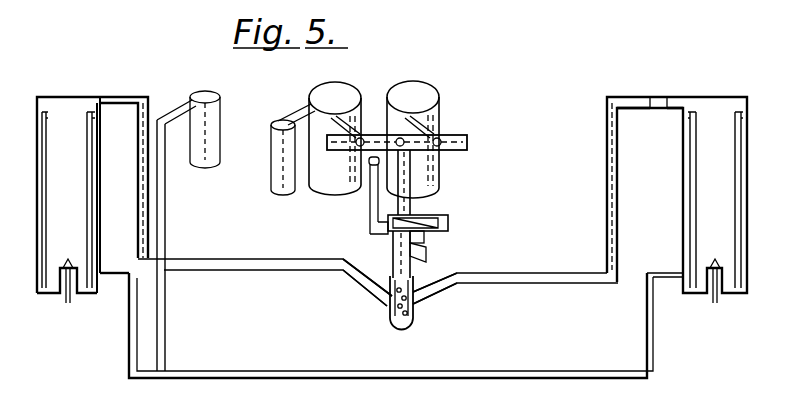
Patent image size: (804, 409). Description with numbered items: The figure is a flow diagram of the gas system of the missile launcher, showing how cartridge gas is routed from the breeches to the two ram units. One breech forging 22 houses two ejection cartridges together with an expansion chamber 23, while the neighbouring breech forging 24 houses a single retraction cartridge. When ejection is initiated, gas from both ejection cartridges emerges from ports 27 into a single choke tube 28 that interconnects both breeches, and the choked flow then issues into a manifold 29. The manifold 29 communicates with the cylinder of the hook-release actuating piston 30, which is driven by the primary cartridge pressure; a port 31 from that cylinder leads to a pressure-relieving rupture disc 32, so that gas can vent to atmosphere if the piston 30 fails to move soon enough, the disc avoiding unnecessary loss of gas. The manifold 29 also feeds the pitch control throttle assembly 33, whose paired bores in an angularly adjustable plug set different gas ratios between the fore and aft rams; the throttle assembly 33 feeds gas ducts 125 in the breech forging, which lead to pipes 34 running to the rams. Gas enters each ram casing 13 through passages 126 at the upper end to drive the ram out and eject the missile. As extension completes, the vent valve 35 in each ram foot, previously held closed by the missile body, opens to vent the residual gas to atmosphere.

The ram casing 13 is at (100, 202).
The breech forging 22 is at (342, 94).
The expansion chamber 23 is at (275, 168).
The breech forging 24 is at (222, 128).
The ports 27 is at (440, 125).
The choke tube 28 is at (458, 133).
The manifold 29 is at (412, 194).
The hook-release actuating piston 30 is at (450, 222).
The port 31 is at (376, 234).
The rupture disc 32 is at (354, 195).
The pitch control throttle assembly 33 is at (390, 322).
The pipes 34 is at (238, 272).
The vent valve 35 is at (67, 302).
The gas ducts 125 is at (368, 275).
The passages 126 is at (100, 97).